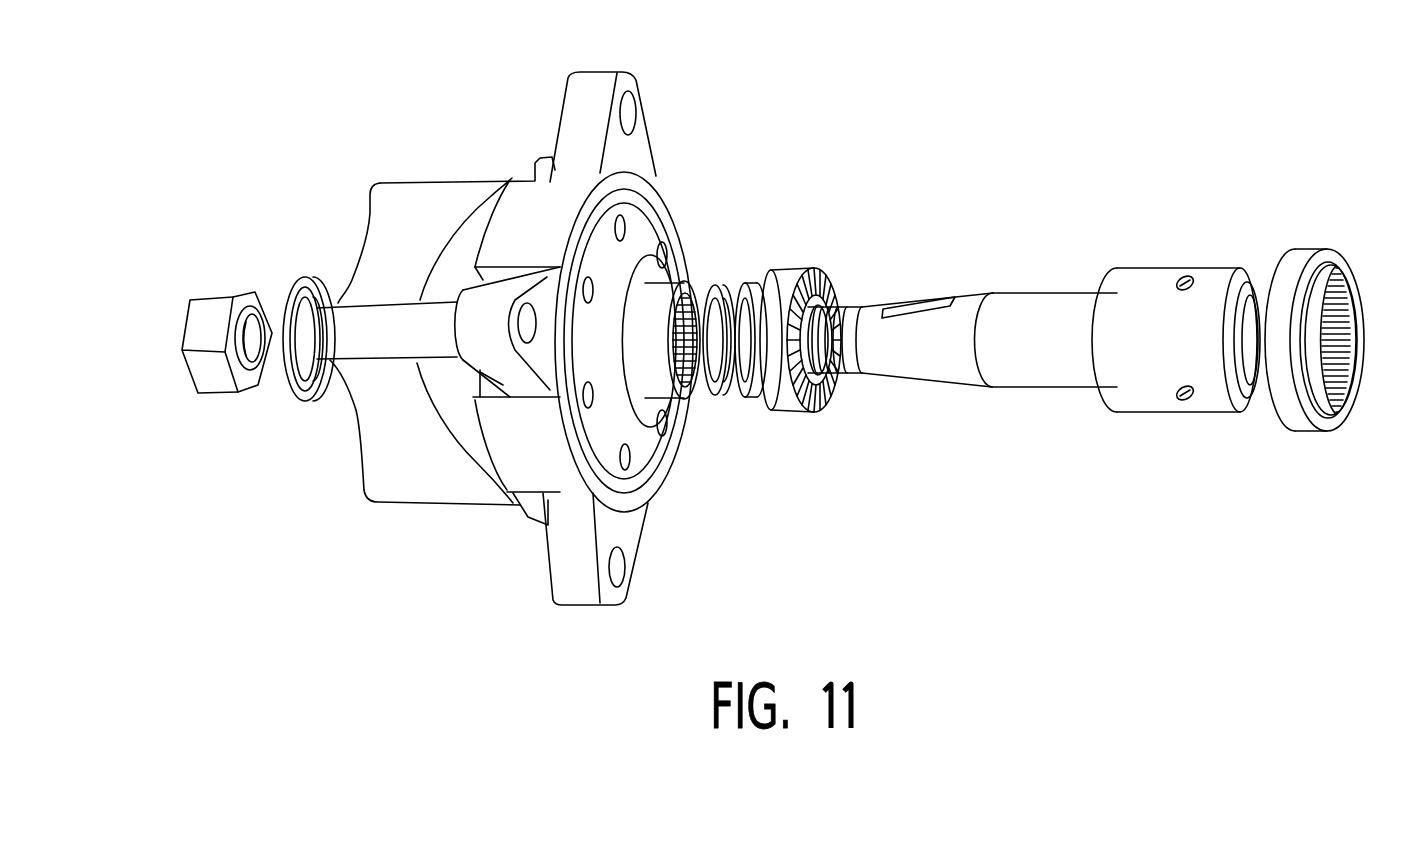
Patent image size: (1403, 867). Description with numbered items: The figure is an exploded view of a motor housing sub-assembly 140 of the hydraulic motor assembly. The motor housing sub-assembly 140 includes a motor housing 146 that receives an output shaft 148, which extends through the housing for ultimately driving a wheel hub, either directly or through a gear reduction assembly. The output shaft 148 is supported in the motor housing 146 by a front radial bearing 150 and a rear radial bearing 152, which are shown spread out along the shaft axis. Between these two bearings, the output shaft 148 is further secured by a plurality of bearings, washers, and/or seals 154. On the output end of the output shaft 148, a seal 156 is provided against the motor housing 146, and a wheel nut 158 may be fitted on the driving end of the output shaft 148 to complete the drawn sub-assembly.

The motor housing sub-assembly 140 is at (916, 120).
The motor housing 146 is at (512, 193).
The output shaft 148 is at (998, 304).
The front radial bearing 150 is at (700, 283).
The rear radial bearing 152 is at (1330, 256).
The bearings, washers, and/or seals 154 is at (770, 270).
The seal 156 is at (303, 387).
The wheel nut 158 is at (207, 305).